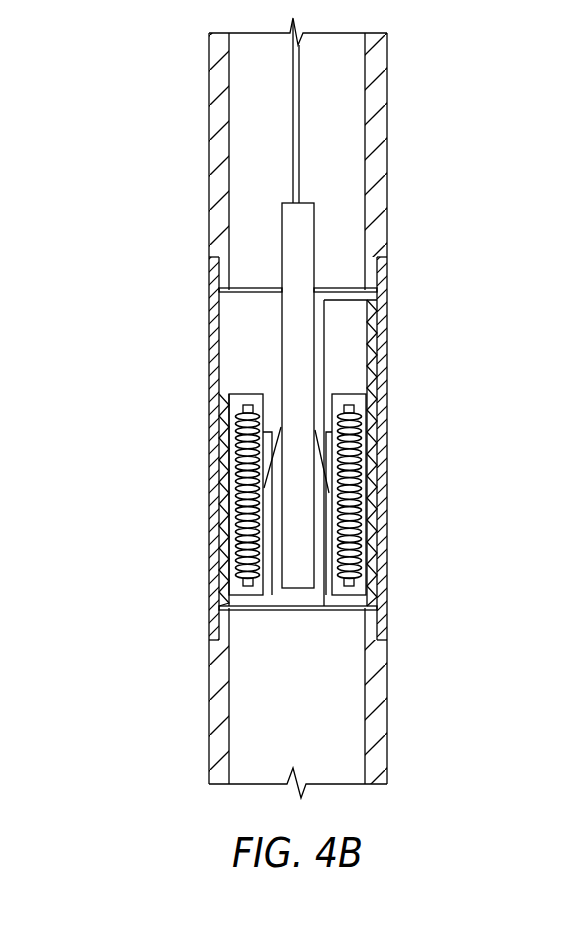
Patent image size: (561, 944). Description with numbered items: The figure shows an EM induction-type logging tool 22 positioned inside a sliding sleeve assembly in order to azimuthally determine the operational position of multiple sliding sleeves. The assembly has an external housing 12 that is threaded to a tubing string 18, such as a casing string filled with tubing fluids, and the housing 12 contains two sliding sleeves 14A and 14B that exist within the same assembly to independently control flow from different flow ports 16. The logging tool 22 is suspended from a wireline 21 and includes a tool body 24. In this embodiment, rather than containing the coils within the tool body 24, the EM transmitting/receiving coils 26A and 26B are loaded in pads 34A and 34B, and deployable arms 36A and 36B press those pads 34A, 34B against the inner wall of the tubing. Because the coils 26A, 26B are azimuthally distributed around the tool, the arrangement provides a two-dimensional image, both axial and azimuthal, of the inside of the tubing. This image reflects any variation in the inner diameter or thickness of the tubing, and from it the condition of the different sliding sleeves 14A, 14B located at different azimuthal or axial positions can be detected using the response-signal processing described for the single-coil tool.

The external housing 12 is at (219, 291).
The sliding sleeve 14A is at (386, 324).
The sliding sleeve 14B is at (217, 551).
The flow ports 16 is at (214, 517).
The tubing string 18 is at (218, 112).
The wireline 21 is at (302, 68).
The EM induction-type logging tool 22 is at (337, 379).
The tool body 24 is at (283, 346).
The EM transmitting/receiving coil 26A is at (268, 466).
The EM transmitting/receiving coil 26B is at (330, 492).
The pad 34A is at (262, 400).
The pad 34B is at (352, 400).
The deployable arm 36A is at (240, 441).
The deployable arm 36B is at (350, 438).